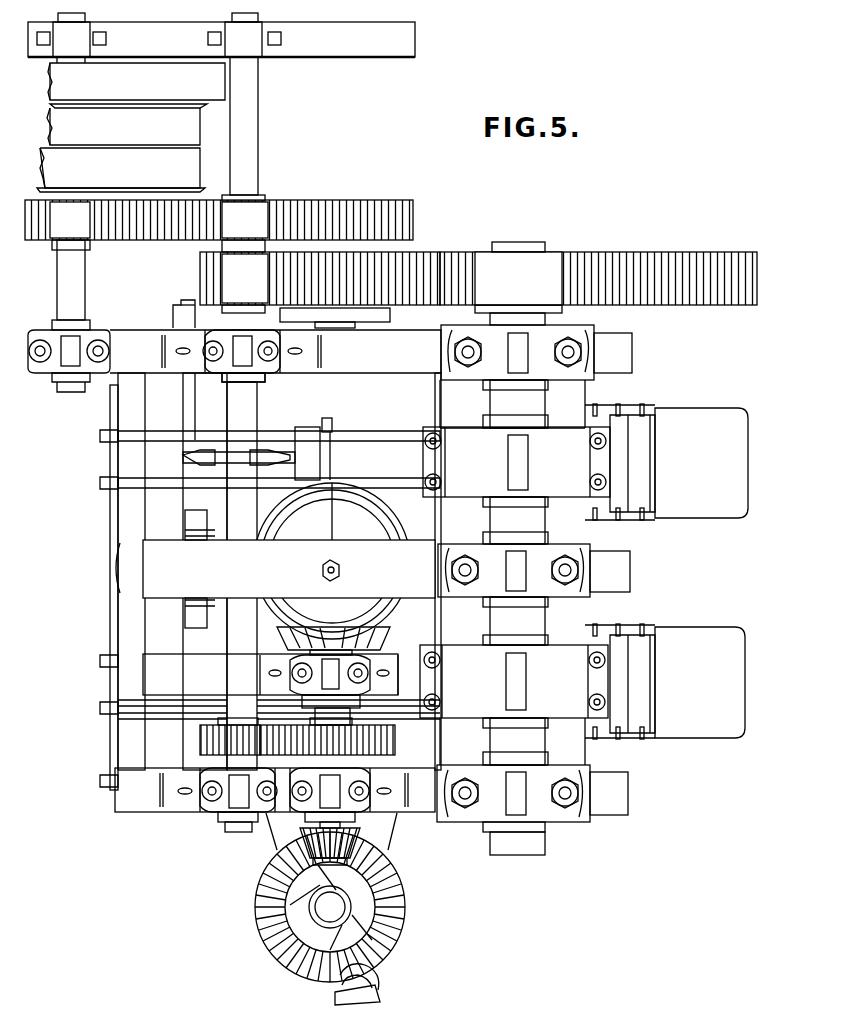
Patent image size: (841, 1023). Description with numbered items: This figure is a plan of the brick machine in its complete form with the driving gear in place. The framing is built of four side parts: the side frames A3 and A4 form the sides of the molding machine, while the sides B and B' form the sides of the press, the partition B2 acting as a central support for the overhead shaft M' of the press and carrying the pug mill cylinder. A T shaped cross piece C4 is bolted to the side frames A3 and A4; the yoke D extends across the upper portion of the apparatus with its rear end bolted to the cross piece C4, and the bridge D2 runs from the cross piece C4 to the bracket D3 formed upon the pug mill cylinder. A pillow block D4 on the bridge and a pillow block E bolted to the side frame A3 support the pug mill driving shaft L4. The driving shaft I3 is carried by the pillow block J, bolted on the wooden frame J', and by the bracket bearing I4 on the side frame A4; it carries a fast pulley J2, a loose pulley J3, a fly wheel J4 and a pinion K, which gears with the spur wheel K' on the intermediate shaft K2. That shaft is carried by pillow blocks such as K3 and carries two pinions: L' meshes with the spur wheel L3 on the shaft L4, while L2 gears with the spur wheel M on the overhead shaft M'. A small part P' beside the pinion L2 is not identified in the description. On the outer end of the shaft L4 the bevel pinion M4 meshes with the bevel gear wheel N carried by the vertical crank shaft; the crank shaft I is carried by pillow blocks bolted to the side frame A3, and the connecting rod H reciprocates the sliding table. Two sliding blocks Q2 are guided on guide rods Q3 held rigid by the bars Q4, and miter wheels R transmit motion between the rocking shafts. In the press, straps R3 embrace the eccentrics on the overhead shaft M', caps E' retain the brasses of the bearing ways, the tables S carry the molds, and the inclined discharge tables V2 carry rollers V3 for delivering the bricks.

The pillow block J is at (221, 28).
The wooden frame J' is at (374, 14).
The fast pulley J2 is at (120, 176).
The loose pulley J3 is at (118, 120).
The fly wheel J4 is at (113, 78).
The crank shaft I is at (260, 28).
The intermediate shaft K2 is at (245, 78).
The spur wheel K' is at (219, 213).
The pinion wheel K is at (35, 249).
The driving shaft I3 is at (78, 284).
The pinion wheel L2 is at (208, 272).
The spur wheel M is at (598, 273).
The bracket P' is at (173, 314).
The side frame A4 is at (148, 338).
The bracket bearing I4 is at (48, 372).
The side of press B' is at (536, 345).
The cap E' is at (500, 611).
The table of press S is at (570, 402).
The strap R3 is at (515, 572).
The roller V3 is at (618, 498).
The inclined discharge table V2 is at (698, 420).
The partition B2 is at (605, 580).
The overhead shaft M' is at (480, 521).
The side of press B is at (533, 805).
The bar Q4 is at (118, 506).
The T shaped cross piece C4 is at (155, 615).
The pillow block K3 is at (218, 812).
The guide rod Q3 is at (403, 430).
The sliding block Q2 is at (306, 428).
The yoke D is at (275, 569).
The miter wheel R is at (205, 540).
The bridge D2 is at (270, 674).
The pillow block D4 is at (329, 690).
The bracket D3 is at (395, 655).
The pinion wheel L' is at (224, 731).
The spur wheel L3 is at (385, 742).
The pug mill driving shaft L4 is at (338, 710).
The side frame A3 is at (150, 810).
The pillow block E is at (348, 784).
The bevel gear pinion wheel M4 is at (305, 838).
The bevel gear wheel N is at (270, 903).
The connecting rod H is at (335, 992).